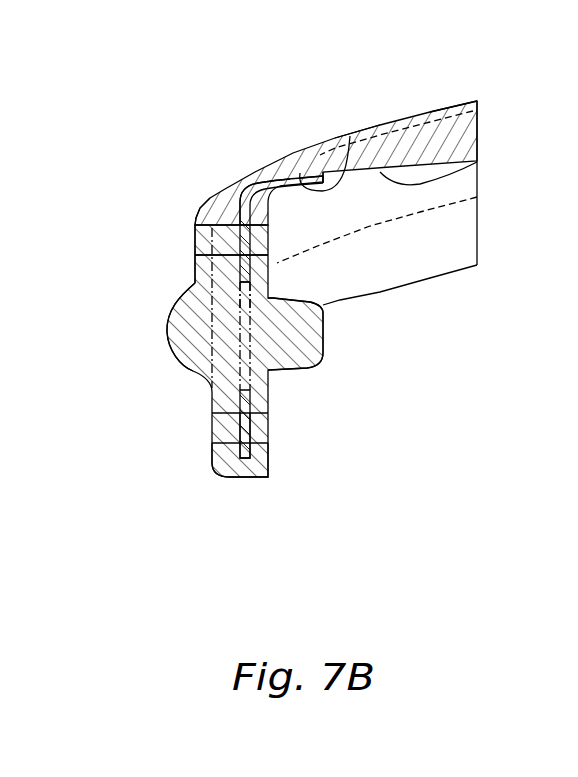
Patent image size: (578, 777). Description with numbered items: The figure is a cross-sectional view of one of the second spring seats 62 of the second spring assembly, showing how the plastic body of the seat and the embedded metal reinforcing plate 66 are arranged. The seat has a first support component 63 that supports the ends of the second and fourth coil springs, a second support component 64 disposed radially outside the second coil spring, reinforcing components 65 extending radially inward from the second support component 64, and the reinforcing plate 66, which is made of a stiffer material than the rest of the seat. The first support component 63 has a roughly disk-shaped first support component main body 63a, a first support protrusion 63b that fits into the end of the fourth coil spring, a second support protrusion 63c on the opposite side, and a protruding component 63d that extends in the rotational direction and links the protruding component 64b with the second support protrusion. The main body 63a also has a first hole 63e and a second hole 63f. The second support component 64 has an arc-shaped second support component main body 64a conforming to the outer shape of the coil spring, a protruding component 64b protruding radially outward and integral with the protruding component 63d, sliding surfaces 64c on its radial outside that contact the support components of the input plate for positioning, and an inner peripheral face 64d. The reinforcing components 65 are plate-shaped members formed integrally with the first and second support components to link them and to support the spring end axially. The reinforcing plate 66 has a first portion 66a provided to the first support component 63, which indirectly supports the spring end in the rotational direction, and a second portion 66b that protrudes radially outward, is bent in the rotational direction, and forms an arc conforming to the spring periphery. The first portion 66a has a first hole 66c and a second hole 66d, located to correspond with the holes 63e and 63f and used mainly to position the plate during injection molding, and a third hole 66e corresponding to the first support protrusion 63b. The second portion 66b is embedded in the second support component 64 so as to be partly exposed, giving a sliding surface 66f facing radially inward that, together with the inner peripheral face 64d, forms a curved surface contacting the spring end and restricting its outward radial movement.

The second spring seat 62 is at (237, 146).
The first support component 63 is at (207, 401).
The first support component main body 63a is at (193, 283).
The first support protrusion 63b is at (324, 352).
The second support protrusion 63c is at (174, 350).
The protruding component 63d is at (193, 262).
The first hole 63e is at (206, 223).
The second hole 63f is at (232, 418).
The second support component 64 is at (336, 134).
The second support component main body 64a is at (403, 147).
The protruding component 64b is at (453, 112).
The sliding surface 64c is at (322, 150).
The inner peripheral face 64d is at (477, 168).
The reinforcing component 65 is at (447, 238).
The reinforcing plate 66 is at (240, 198).
The first portion 66a is at (252, 410).
The second portion 66b is at (300, 176).
The first hole 66c is at (239, 212).
The second hole 66d is at (252, 441).
The third hole 66e is at (217, 305).
The sliding surface 66f is at (345, 178).